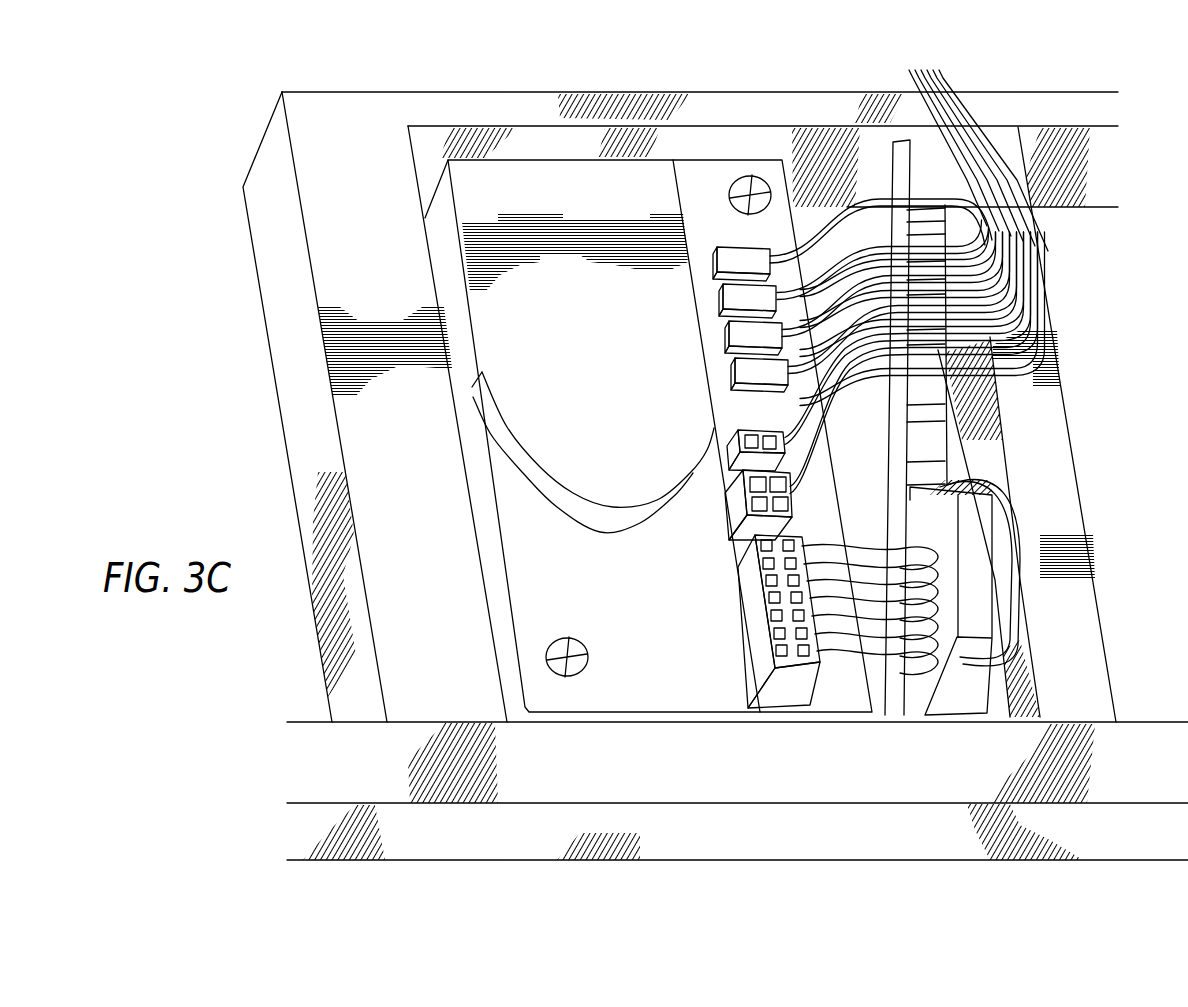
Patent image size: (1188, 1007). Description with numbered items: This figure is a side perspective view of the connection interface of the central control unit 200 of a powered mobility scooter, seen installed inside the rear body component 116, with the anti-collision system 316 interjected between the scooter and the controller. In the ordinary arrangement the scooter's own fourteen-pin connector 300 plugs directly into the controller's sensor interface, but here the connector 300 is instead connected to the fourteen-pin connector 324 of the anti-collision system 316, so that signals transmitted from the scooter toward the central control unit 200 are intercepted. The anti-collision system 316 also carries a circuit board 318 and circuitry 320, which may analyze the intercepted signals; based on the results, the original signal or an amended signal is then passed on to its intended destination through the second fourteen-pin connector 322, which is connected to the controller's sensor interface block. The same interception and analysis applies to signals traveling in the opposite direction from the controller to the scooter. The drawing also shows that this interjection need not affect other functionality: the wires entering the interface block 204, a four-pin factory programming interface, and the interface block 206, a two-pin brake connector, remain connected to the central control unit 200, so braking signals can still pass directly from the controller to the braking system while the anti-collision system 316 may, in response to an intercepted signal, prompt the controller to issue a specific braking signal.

The rear body component 116 is at (373, 222).
The central control unit 200 is at (548, 150).
The interface block 204 is at (738, 507).
The interface block 206 is at (727, 450).
The 14-pin connector 300 is at (957, 673).
The anti-collision system 316 is at (942, 176).
The circuit board 318 is at (900, 238).
The circuitry 320 is at (966, 422).
The 14-pin connector 322 is at (745, 587).
The 14-pin connector 324 is at (910, 688).